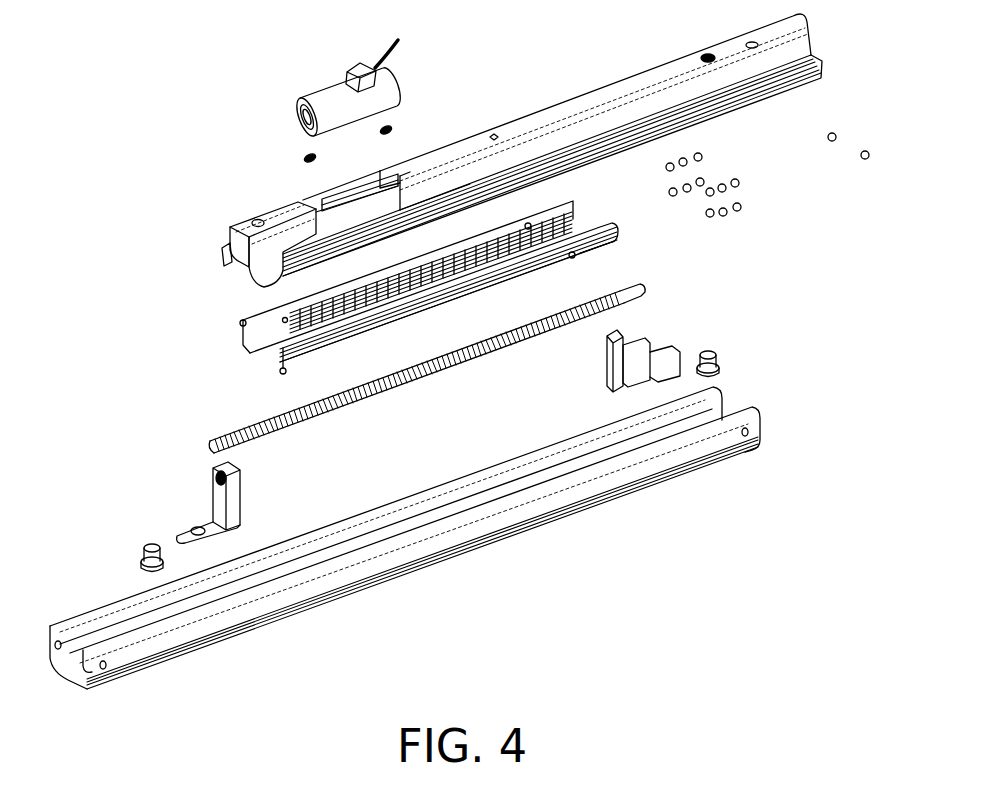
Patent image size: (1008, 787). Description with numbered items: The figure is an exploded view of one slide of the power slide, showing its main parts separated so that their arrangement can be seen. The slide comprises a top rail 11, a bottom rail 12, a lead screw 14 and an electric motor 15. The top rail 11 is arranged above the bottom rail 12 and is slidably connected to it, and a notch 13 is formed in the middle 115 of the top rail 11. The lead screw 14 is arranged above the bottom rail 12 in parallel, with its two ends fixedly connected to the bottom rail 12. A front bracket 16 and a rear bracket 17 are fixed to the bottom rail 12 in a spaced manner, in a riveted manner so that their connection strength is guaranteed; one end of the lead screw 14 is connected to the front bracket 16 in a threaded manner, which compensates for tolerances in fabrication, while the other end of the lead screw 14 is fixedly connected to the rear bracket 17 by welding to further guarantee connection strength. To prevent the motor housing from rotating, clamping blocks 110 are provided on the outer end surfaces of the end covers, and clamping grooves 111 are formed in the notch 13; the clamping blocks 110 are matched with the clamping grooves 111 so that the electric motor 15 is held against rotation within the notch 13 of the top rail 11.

The top rail 11 is at (540, 120).
The bottom rail 12 is at (530, 515).
The notch 13 is at (330, 197).
The lead screw 14 is at (255, 425).
The electric motor 15 is at (327, 102).
The front bracket 16 is at (220, 500).
The rear bracket 17 is at (640, 360).
The clamping block 110 is at (300, 110).
The clamping groove 111 is at (325, 200).
The middle 115 is at (388, 240).